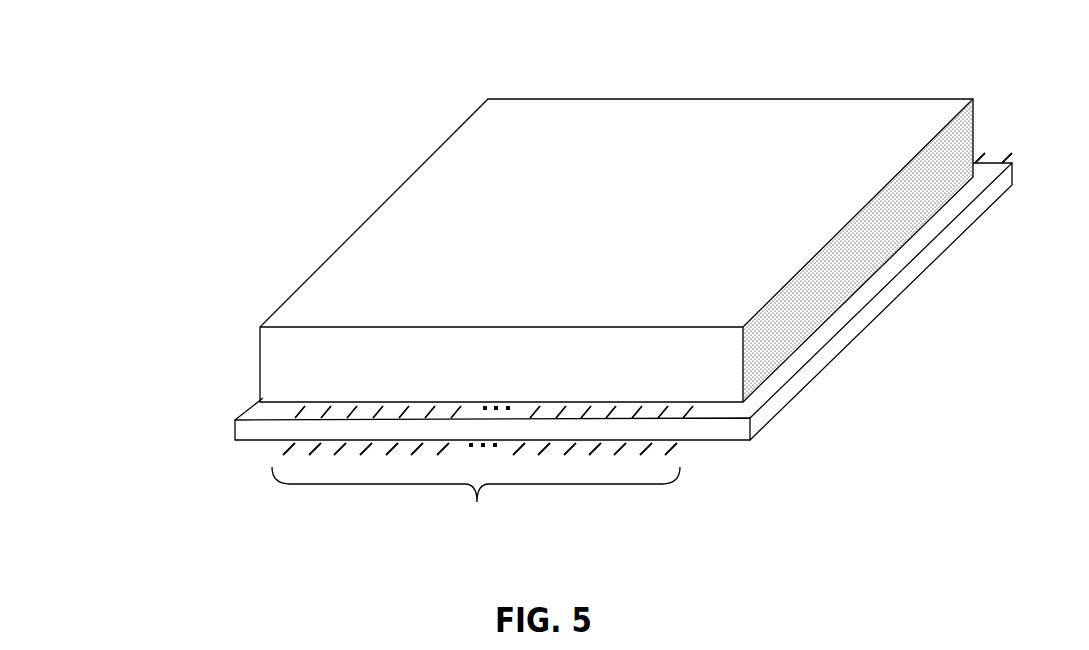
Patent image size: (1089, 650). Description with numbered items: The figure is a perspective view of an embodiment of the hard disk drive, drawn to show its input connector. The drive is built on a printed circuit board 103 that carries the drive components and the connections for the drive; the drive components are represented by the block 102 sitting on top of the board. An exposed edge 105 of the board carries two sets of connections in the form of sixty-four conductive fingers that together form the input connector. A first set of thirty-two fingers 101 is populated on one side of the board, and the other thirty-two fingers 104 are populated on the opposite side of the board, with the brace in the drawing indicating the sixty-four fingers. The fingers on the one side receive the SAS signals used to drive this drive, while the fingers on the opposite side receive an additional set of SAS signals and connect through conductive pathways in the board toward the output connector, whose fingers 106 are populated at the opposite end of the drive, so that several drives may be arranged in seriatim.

The top contact fingers 101 is at (256, 414).
The integrated circuit die 102 is at (795, 88).
The substrate 103 is at (888, 317).
The bottom contact fingers 104 is at (693, 453).
The substrate front edge 105 is at (246, 446).
The rear contact fingers 106 is at (1013, 140).